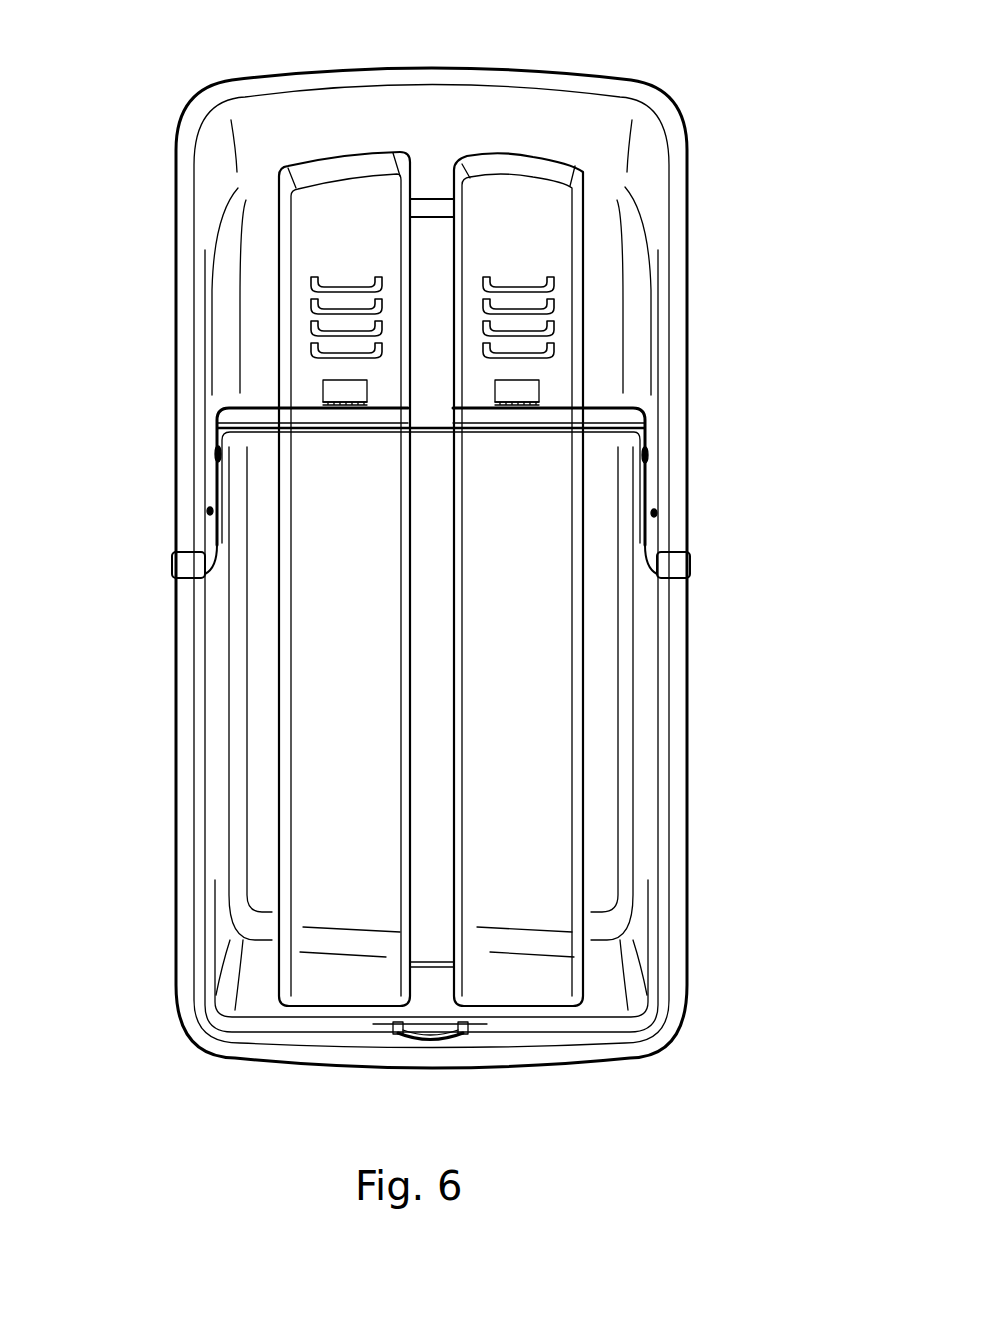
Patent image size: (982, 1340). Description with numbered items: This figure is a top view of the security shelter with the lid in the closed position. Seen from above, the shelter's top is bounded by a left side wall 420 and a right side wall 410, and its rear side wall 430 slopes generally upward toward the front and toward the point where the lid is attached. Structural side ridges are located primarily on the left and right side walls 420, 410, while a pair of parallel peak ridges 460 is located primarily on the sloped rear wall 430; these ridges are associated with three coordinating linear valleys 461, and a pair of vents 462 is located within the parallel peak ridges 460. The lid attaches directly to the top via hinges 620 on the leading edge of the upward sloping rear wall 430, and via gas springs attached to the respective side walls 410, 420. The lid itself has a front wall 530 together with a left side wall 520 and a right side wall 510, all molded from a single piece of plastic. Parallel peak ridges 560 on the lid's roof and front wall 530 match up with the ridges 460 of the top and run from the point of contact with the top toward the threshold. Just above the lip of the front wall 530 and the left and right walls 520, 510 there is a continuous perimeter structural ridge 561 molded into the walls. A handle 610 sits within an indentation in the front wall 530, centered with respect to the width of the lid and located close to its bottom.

The right side wall of the top 410 is at (637, 170).
The left side wall of the top 420 is at (213, 170).
The rear side wall of the top 430 is at (412, 118).
The parallel peak ridges 460 is at (370, 188).
The linear valleys 461 is at (262, 280).
The vent 462 is at (552, 353).
The right side wall of the lid 510 is at (645, 838).
The left side wall of the lid 520 is at (218, 818).
The front wall of the lid 530 is at (307, 1015).
The parallel peak ridges of the lid 560 is at (343, 895).
The continuous perimeter structural ridge 561 is at (263, 662).
The handle 610 is at (466, 1034).
The hinges 620 is at (335, 412).